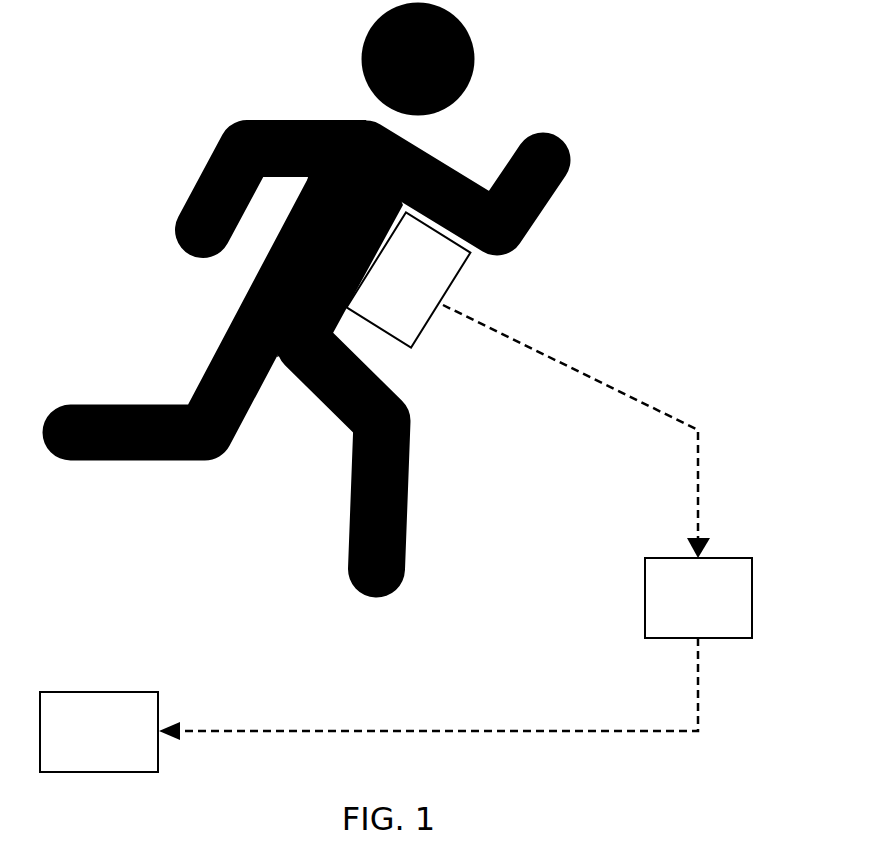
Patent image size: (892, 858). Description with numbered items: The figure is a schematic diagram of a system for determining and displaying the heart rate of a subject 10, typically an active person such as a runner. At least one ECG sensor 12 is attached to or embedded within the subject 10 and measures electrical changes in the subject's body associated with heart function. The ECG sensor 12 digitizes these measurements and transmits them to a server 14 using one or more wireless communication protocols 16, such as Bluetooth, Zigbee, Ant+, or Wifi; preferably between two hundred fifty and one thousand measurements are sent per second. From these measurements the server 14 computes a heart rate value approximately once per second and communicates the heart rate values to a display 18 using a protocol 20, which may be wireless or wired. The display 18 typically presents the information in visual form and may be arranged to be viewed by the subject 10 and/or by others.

The subject 10 is at (203, 175).
The ECG sensor 12 is at (416, 350).
The server 14 is at (643, 597).
The wireless communication protocols 16 is at (632, 397).
The display 18 is at (90, 692).
The protocol 20 is at (498, 732).